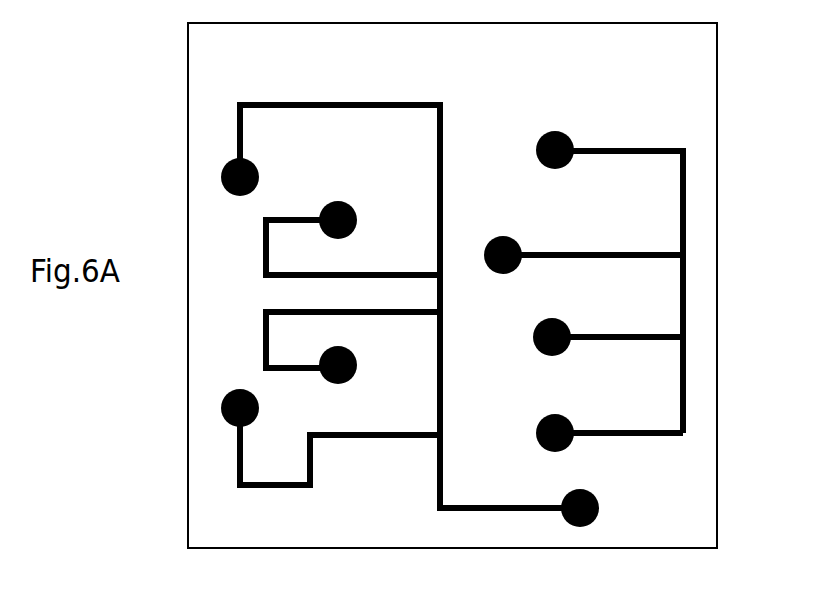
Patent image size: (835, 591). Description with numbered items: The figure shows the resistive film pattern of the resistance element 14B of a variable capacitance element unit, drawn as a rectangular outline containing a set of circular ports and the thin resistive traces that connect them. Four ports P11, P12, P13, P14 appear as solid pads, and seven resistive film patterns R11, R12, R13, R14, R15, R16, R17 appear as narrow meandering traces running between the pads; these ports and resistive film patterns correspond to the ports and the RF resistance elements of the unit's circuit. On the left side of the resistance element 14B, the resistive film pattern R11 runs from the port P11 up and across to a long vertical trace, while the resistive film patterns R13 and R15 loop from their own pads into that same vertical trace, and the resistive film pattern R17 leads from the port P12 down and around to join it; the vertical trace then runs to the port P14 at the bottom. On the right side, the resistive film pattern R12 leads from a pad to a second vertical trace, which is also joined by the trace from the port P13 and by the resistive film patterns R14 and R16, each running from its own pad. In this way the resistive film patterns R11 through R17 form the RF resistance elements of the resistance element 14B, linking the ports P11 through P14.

The resistance element 14B is at (797, 46).
The port P11 is at (258, 177).
The port P12 is at (259, 408).
The port P13 is at (583, 249).
The port P14 is at (600, 508).
The resistive film pattern R11 is at (378, 109).
The resistive film pattern R12 is at (625, 147).
The resistive film pattern R13 is at (372, 272).
The resistive film pattern R14 is at (620, 333).
The resistive film pattern R15 is at (385, 315).
The resistive film pattern R16 is at (622, 432).
The resistive film pattern R17 is at (387, 437).